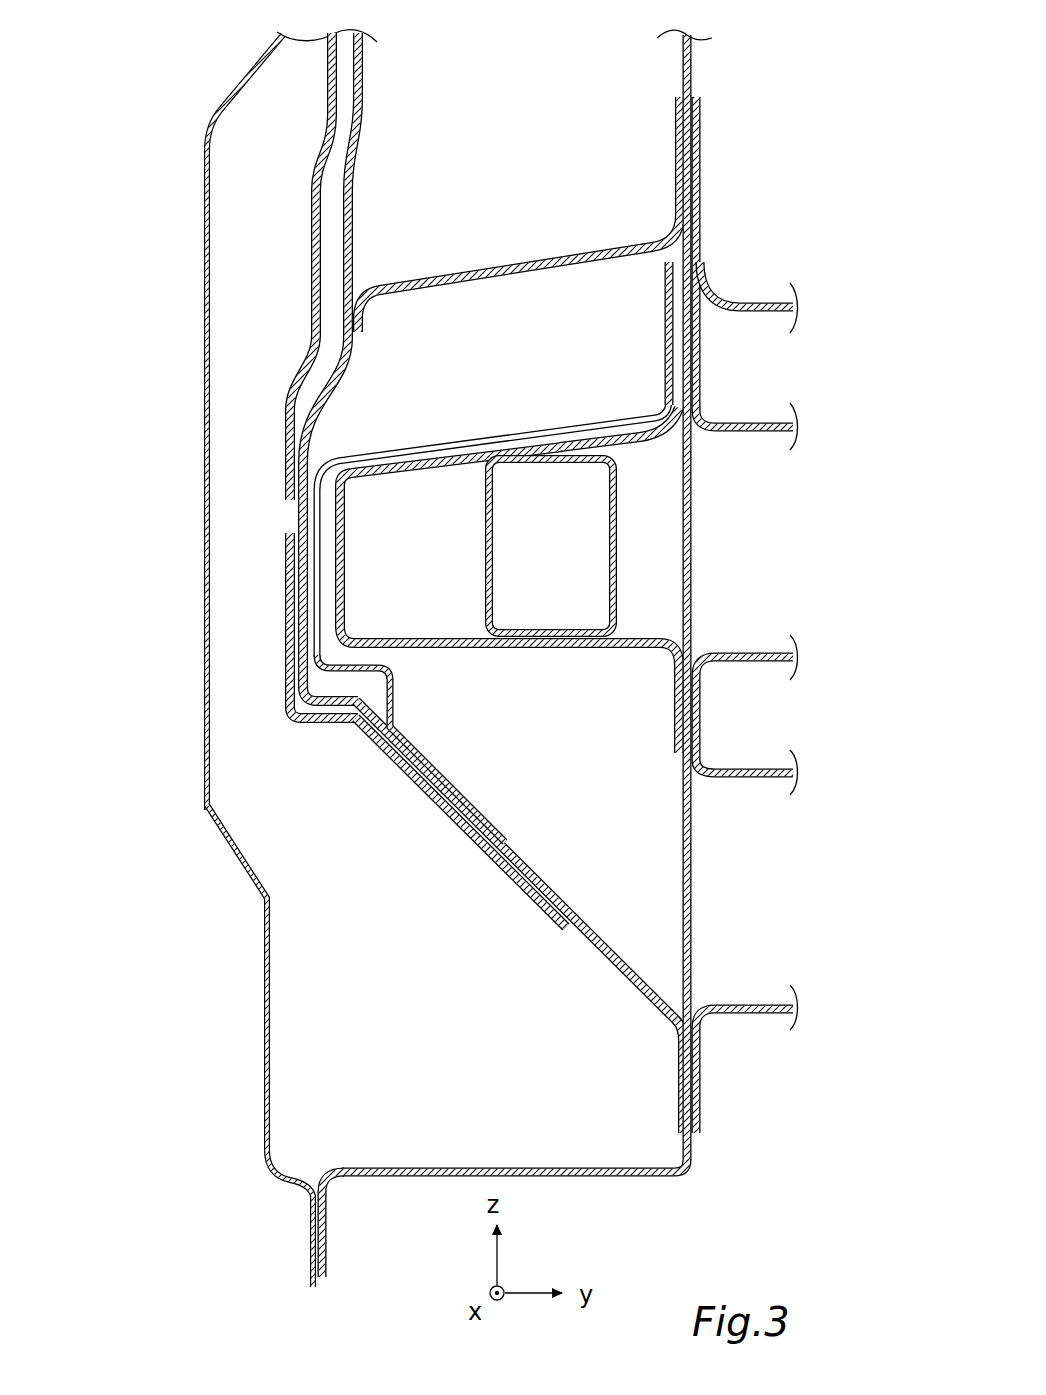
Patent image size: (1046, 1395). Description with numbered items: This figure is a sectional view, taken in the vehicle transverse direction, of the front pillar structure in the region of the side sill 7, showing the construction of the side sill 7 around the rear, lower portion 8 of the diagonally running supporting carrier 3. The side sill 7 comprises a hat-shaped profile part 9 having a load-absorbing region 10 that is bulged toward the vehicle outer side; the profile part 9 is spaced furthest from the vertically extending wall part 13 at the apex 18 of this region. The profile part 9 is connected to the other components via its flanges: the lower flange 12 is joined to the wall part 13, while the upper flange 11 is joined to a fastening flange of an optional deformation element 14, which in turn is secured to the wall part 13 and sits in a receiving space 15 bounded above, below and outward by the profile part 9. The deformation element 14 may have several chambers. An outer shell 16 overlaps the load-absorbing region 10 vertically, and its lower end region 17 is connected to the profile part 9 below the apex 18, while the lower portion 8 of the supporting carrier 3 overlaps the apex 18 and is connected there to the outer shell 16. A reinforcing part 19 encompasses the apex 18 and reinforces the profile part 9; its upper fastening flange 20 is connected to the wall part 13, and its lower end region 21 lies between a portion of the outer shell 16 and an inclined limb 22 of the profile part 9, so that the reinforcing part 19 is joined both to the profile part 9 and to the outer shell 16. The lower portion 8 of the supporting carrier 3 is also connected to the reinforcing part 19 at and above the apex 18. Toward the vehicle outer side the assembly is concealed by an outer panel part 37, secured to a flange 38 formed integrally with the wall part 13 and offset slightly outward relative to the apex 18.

The supporting carrier 3 is at (378, 90).
The side sill 7 is at (653, 303).
The lower portion 8 is at (305, 417).
The profile part 9 is at (382, 425).
The load-absorbing region 10 is at (440, 432).
The upper flange 11 is at (668, 362).
The lower flange 12 is at (678, 1068).
The wall part 13 is at (690, 890).
The deformation element 14 is at (652, 442).
The receiving space 15 is at (522, 728).
The outer shell 16 is at (287, 143).
The lower end region 17 is at (518, 883).
The apex 18 is at (317, 580).
The reinforcing part 19 is at (485, 263).
The upper fastening flange 20 is at (675, 155).
The lower end region 21 is at (398, 772).
The limb 22 is at (500, 832).
The outer panel part 37 is at (205, 722).
The flange 38 is at (325, 1230).